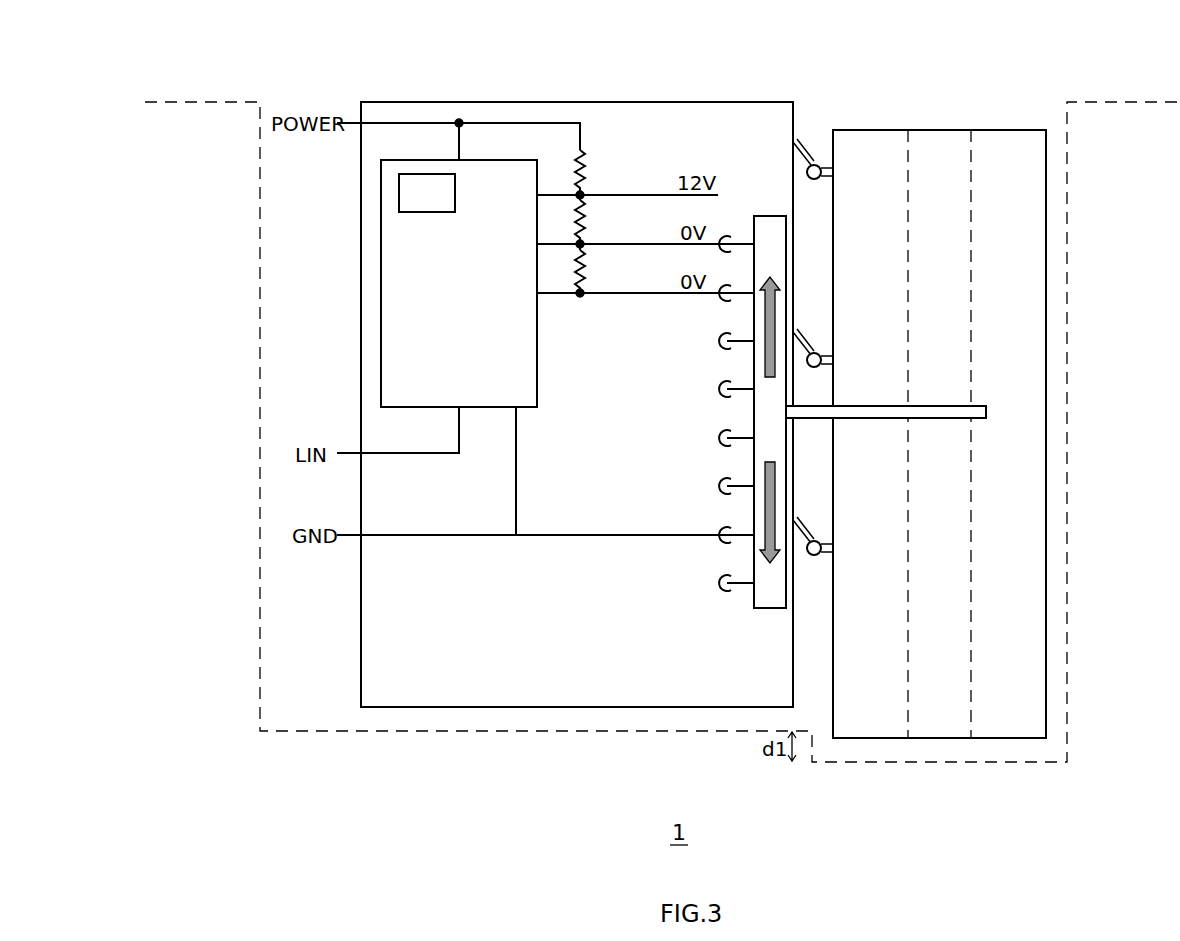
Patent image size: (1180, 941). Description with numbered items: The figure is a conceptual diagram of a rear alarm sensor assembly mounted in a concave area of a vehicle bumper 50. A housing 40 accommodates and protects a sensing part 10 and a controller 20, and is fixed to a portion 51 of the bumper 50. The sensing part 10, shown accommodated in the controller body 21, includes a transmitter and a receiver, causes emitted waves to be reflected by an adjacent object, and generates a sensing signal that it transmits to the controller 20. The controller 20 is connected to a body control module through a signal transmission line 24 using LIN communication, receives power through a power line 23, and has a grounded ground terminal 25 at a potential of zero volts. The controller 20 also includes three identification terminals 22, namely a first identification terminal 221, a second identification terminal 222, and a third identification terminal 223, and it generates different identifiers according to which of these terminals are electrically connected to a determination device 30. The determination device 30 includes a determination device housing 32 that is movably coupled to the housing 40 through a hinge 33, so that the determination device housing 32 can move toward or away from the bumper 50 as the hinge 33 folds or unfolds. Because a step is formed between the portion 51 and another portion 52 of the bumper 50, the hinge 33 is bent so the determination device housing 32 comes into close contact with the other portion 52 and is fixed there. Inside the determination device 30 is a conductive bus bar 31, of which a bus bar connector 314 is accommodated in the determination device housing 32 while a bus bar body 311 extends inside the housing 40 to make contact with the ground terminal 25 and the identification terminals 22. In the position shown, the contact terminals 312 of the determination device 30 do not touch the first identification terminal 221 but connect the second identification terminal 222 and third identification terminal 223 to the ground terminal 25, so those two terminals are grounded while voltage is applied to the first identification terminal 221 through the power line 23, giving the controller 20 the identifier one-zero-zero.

The sensing part 10 is at (399, 192).
The controller 20 is at (350, 316).
The controller body 21 is at (381, 275).
The identification terminals 22 is at (647, 150).
The first identification terminal 221 is at (603, 194).
The second identification terminal 222 is at (622, 244).
The third identification terminal 223 is at (643, 293).
The power line 23 is at (412, 121).
The signal transmission line 24 is at (404, 455).
The ground terminal 25 is at (487, 537).
The determination device 30 is at (960, 433).
The bus bar 31 is at (818, 402).
The bus bar body 311 is at (775, 437).
The contact terminals 312 is at (804, 381).
The bus bar connector 314 is at (938, 406).
The determination device housing 32 is at (1046, 493).
The hinge 33 is at (810, 160).
The housing 40 is at (430, 693).
The bumper 50 is at (1154, 341).
The portion of the bumper 51 is at (527, 735).
The other portion of the bumper 52 is at (927, 766).